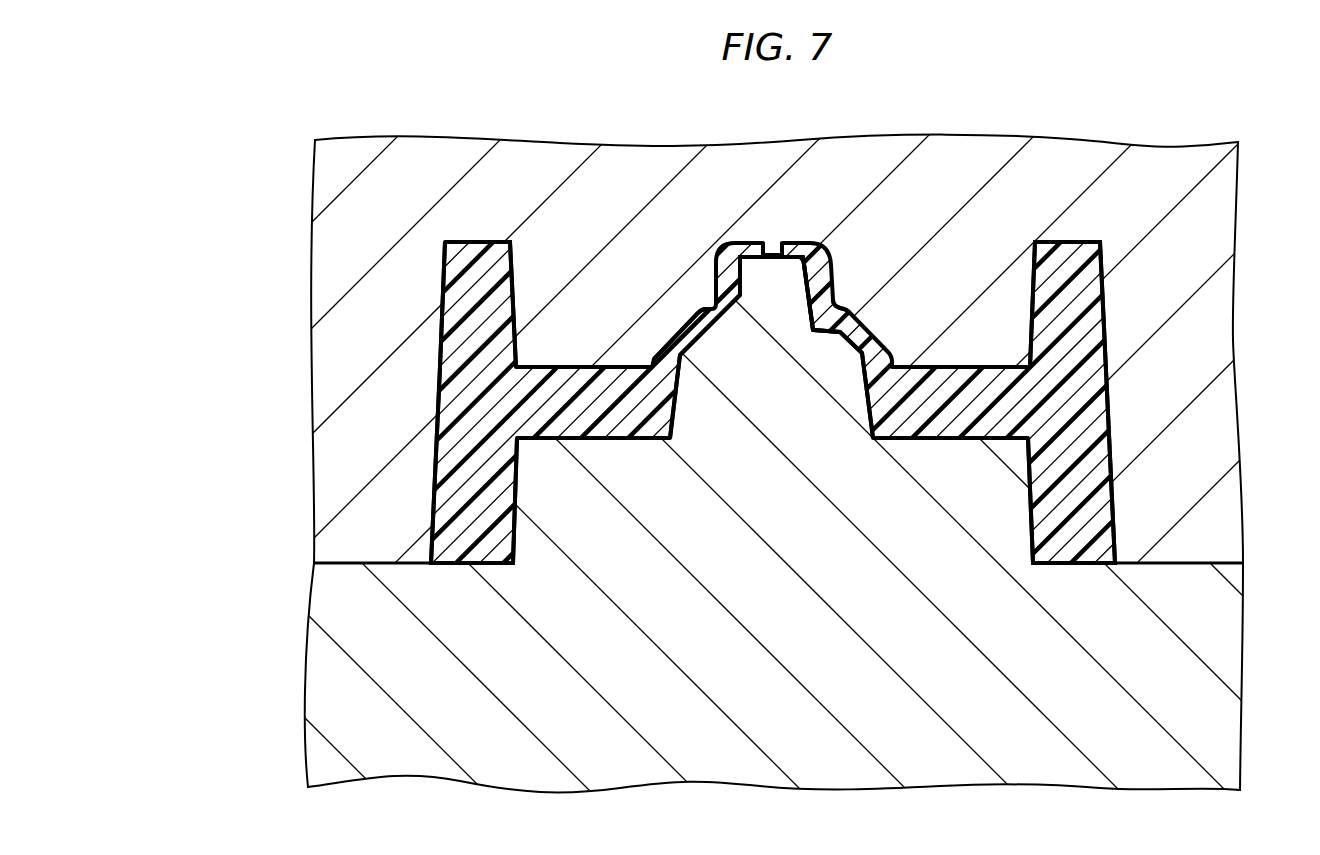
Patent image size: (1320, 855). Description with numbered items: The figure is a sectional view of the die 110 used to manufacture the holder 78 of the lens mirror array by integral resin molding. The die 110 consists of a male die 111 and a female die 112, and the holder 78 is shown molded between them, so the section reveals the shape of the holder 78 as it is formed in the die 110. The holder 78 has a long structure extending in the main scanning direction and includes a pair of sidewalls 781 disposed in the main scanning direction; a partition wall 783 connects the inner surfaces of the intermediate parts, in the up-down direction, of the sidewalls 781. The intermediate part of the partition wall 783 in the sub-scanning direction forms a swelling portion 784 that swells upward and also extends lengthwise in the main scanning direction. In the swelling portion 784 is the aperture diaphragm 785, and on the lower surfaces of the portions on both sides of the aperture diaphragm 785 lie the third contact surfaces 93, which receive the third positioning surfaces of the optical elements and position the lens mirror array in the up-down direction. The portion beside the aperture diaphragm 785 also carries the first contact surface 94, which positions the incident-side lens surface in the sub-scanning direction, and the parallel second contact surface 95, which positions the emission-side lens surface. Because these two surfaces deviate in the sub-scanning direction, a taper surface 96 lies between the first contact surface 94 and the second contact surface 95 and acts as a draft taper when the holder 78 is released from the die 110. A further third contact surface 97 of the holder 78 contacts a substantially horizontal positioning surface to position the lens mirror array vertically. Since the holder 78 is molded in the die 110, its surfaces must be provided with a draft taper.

The holder 78 is at (1098, 365).
The sidewalls 781 is at (442, 453).
The partition wall 783 is at (943, 425).
The swelling portion 784 is at (690, 321).
The aperture diaphragm 785 is at (770, 243).
The third contact surfaces 93 is at (788, 253).
The first contact surface 94 is at (803, 259).
The second contact surface 95 is at (815, 328).
The taper surface 96 is at (808, 293).
The third contact surface 97 is at (822, 333).
The die 110 is at (218, 473).
The male die 111 is at (323, 612).
The female die 112 is at (323, 490).